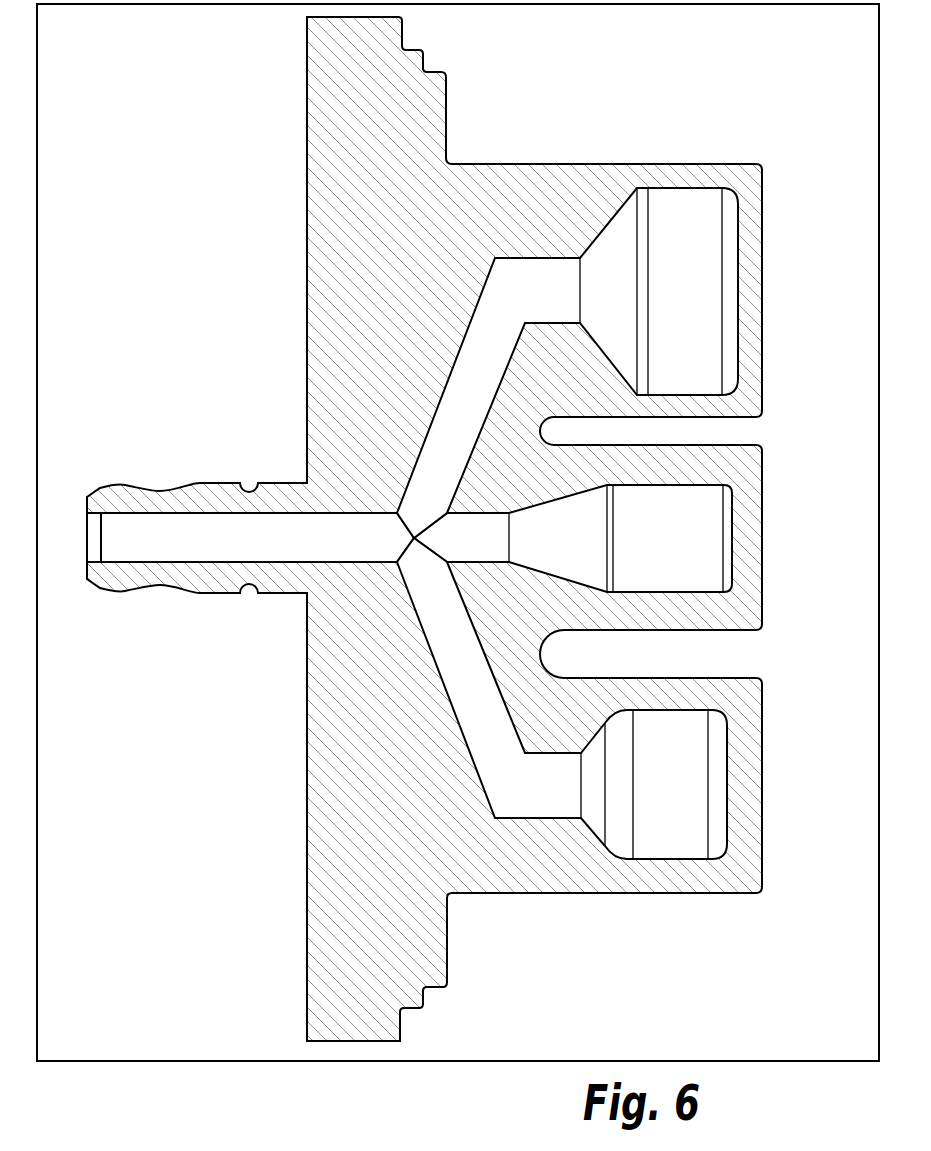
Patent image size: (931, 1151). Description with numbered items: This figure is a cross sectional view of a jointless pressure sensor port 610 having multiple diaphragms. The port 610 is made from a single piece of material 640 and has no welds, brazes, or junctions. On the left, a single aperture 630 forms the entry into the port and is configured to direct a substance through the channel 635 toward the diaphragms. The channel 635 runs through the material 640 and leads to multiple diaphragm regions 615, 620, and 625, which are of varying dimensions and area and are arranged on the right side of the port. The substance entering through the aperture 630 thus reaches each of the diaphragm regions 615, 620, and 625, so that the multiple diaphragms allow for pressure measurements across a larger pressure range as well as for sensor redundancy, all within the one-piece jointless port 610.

The jointless pressure sensor port 610 is at (475, 529).
The diaphragm region 615 is at (743, 297).
The diaphragm region 620 is at (727, 532).
The diaphragm region 625 is at (727, 802).
The aperture 630 is at (84, 537).
The channel 635 is at (306, 532).
The single piece of material 640 is at (355, 260).